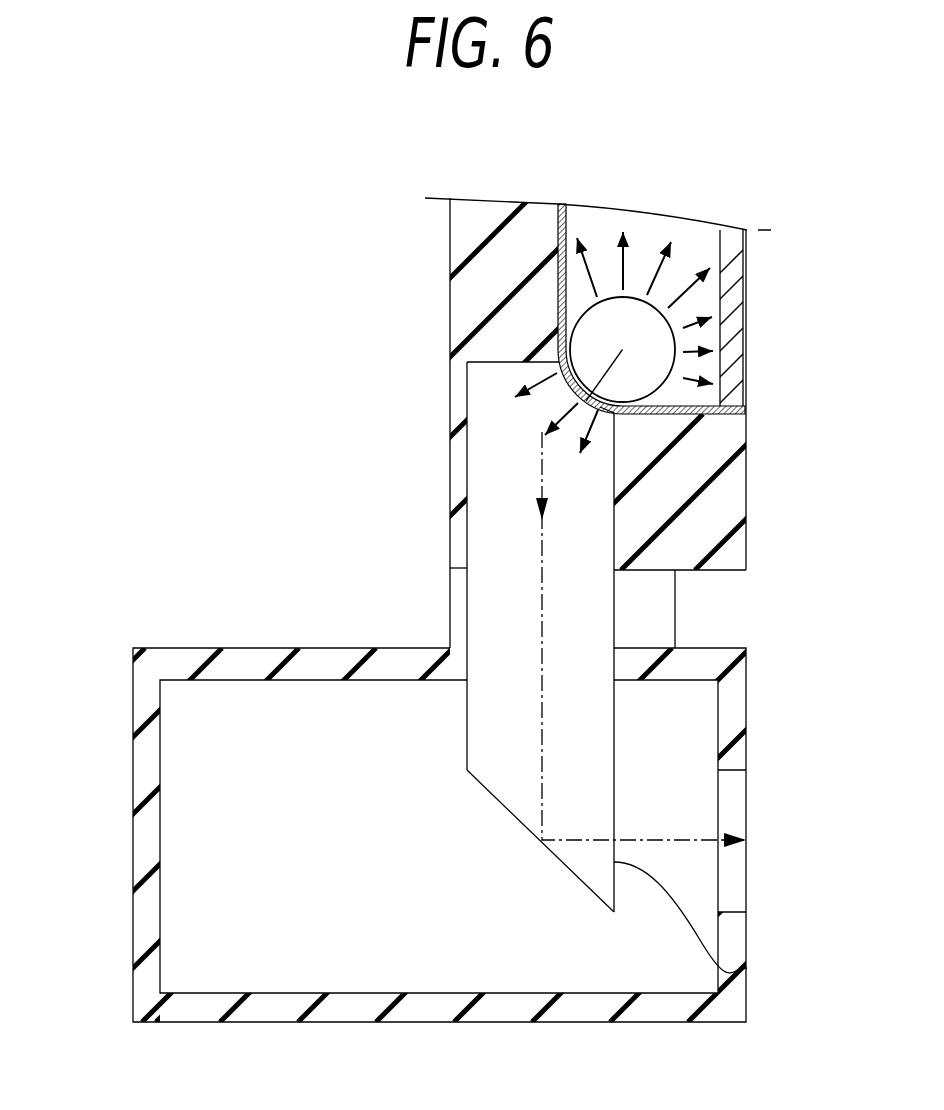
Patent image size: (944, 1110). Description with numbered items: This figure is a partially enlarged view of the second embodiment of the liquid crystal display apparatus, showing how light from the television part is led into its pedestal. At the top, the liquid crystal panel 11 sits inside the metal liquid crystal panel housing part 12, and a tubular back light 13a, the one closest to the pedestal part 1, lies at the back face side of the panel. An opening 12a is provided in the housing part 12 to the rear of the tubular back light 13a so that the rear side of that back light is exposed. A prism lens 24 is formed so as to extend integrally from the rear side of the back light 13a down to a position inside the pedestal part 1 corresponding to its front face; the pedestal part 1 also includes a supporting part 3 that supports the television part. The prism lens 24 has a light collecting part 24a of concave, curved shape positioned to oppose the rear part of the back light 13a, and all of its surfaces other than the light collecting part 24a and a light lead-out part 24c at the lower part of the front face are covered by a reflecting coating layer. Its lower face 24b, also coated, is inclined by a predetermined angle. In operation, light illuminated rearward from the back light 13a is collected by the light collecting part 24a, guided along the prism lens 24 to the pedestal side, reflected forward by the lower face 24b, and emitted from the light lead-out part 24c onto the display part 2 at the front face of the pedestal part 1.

The pedestal part 1 is at (740, 764).
The display part 2 is at (740, 878).
The supporting part 3 is at (664, 612).
The liquid crystal panel 11 is at (738, 302).
The liquid crystal panel housing part 12 is at (560, 268).
The opening 12a is at (558, 344).
The tubular back light 13a is at (663, 360).
The prism lens 24 is at (482, 524).
The light collecting part 24a is at (559, 363).
The lower face 24b is at (540, 828).
The light lead-out part 24c is at (745, 968).